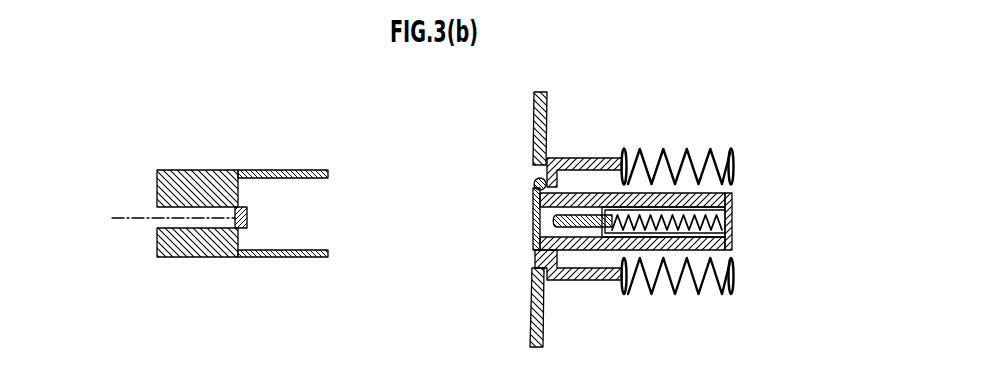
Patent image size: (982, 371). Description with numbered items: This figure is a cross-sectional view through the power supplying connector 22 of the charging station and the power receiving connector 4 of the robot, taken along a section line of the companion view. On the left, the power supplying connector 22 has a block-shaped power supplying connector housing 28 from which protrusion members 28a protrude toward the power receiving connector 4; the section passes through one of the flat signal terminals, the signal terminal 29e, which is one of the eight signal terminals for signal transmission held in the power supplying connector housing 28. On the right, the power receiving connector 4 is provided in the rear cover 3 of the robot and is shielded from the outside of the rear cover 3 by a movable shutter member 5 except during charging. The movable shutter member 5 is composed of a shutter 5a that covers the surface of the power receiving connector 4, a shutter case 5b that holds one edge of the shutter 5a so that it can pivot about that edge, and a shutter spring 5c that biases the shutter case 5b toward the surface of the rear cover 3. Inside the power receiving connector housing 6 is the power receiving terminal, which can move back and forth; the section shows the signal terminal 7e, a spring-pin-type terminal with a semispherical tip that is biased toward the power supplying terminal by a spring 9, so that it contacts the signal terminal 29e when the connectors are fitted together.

The power supplying connector 22 is at (227, 151).
The power supplying connector housing 28 is at (173, 170).
The protrusion members 28a is at (318, 170).
The signal terminal 29e is at (247, 218).
The power receiving connector 4 is at (615, 179).
The rear cover 3 is at (533, 122).
The movable shutter member 5 is at (570, 179).
The shutter 5a is at (533, 215).
The shutter case 5b is at (568, 158).
The shutter spring 5c is at (733, 150).
The power receiving connector housing 6 is at (640, 234).
The signal terminal 7e is at (556, 222).
The spring 9 is at (727, 221).